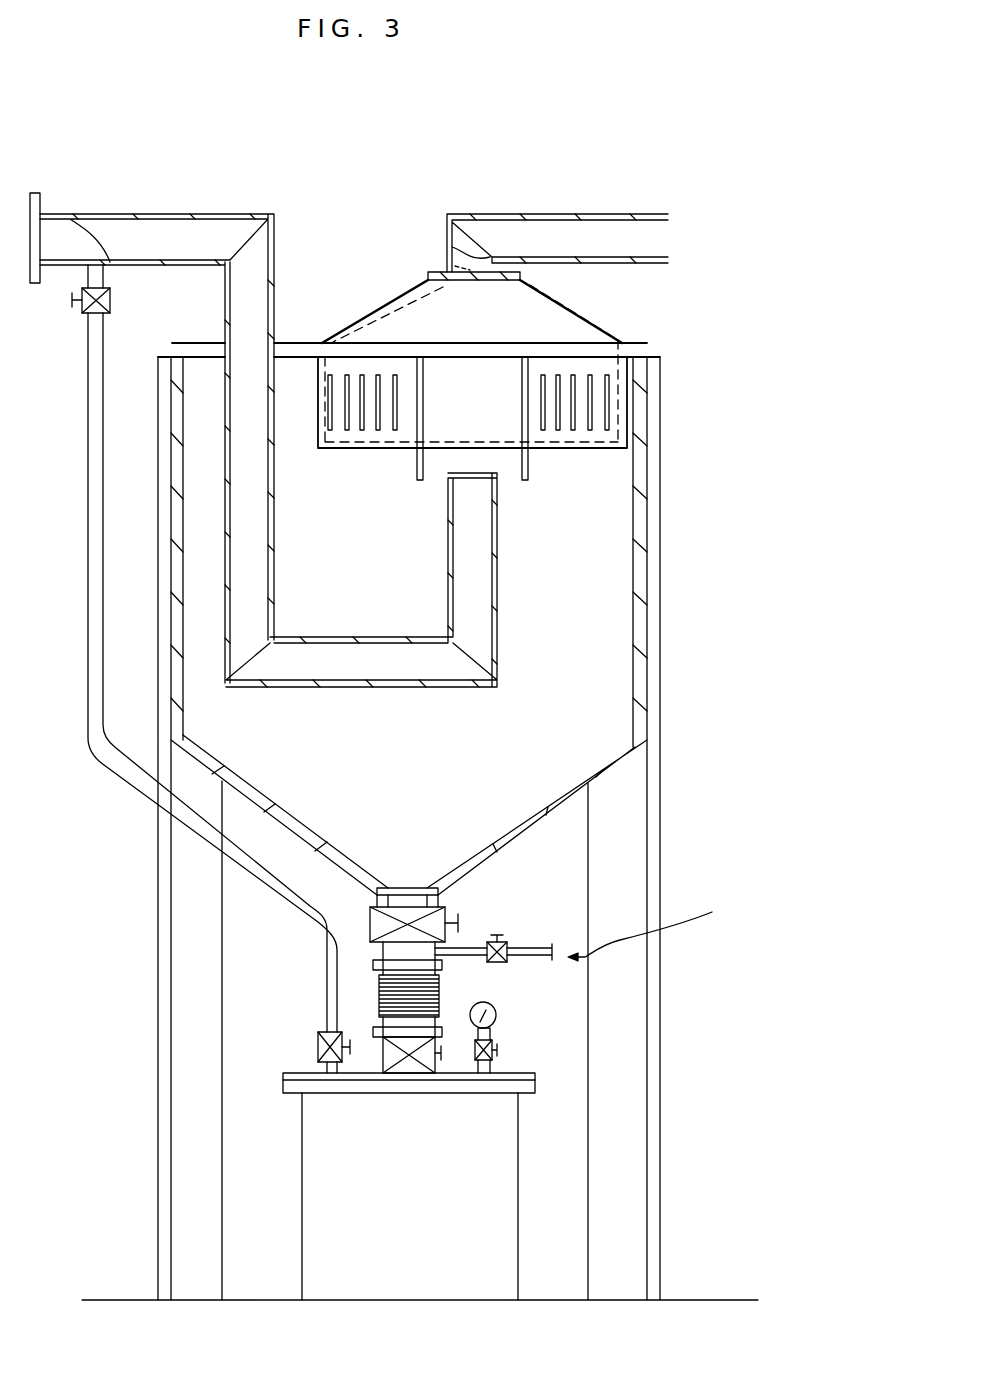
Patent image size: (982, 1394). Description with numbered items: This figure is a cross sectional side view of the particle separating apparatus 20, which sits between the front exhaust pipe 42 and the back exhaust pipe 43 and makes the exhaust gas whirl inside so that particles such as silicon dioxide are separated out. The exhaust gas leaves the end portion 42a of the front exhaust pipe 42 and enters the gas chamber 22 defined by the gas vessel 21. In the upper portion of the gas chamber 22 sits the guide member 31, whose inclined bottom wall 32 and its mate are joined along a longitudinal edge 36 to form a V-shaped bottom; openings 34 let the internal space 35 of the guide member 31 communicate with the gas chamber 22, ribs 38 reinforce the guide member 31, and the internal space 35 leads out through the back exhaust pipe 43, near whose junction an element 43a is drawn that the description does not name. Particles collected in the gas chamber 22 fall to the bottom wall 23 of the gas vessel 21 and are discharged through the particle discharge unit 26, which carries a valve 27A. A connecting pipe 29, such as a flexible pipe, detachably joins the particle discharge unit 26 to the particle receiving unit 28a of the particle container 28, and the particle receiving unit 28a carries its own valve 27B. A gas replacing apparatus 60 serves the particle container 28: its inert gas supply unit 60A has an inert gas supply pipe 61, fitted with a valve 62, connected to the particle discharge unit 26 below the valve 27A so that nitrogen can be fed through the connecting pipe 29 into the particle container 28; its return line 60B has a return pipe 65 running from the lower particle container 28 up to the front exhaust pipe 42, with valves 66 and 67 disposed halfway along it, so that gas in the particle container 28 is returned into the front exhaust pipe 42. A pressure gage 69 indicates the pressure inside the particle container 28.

The particle separating apparatus 20 is at (504, 195).
The gas vessel 21 is at (178, 623).
The gas chamber 22 is at (210, 700).
The bottom wall 23 is at (440, 888).
The particle discharge unit 26 is at (430, 898).
The valve 27A is at (448, 910).
The valve 27B is at (442, 1059).
The particle container 28 is at (519, 1148).
The particle receiving unit 28a is at (383, 1062).
The connecting pipe 29 is at (441, 985).
The guide member 31 is at (373, 292).
The bottom wall 32 is at (493, 384).
The openings 34 is at (347, 432).
The internal space 35 is at (513, 312).
The longitudinal edge 36 is at (439, 450).
The ribs 38 is at (416, 470).
The front exhaust pipe 42 is at (225, 293).
The end portion 42a is at (488, 474).
The back exhaust pipe 43 is at (558, 216).
The damper 43a is at (452, 266).
The gas replacing apparatus 60 is at (656, 932).
The inert gas supply unit 60A is at (598, 887).
The return line 60B is at (301, 994).
The inert gas supply pipe 61 is at (520, 950).
The valve 62 is at (538, 948).
The return pipe 65 is at (327, 965).
The valve 66 is at (318, 1045).
The valve 67 is at (82, 318).
The pressure gage 69 is at (497, 1015).